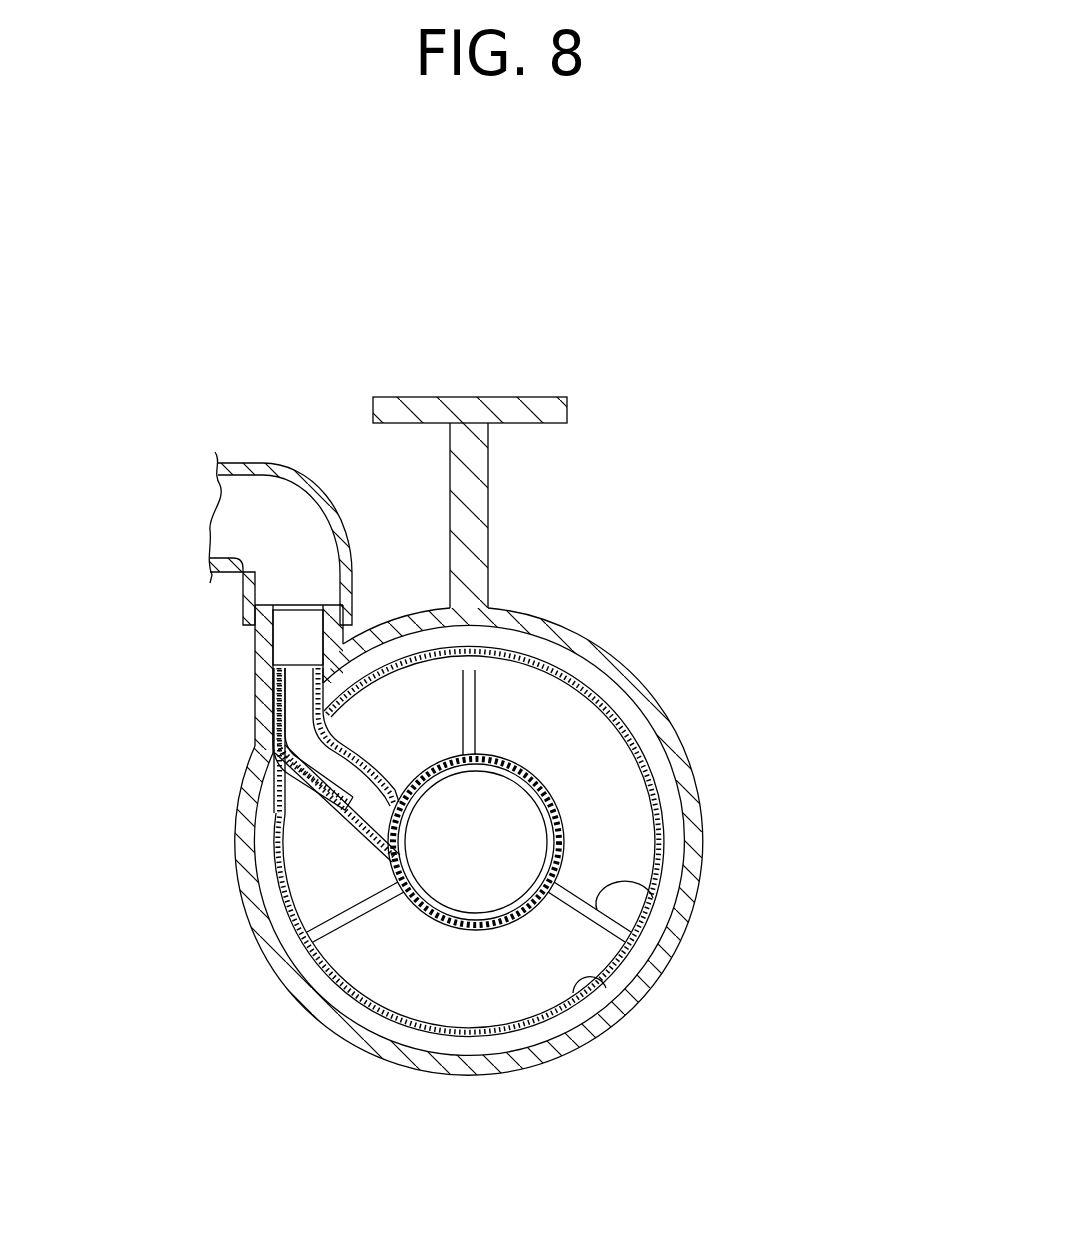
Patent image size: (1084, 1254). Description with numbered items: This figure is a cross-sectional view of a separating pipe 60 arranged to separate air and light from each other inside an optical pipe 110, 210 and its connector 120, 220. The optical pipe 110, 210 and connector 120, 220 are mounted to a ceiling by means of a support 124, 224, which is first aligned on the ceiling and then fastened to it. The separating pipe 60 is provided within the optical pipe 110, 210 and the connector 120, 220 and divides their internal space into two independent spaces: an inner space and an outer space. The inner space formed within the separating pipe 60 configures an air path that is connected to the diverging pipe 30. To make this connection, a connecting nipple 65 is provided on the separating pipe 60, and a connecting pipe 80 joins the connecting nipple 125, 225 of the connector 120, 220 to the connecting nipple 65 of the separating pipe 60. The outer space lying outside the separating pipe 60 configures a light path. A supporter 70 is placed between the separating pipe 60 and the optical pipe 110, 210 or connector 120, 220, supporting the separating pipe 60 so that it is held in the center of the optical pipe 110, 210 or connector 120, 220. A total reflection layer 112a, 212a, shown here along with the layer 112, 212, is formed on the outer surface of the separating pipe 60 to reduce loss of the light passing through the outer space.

The diverging pipe 30 is at (262, 463).
The separating pipe 60 is at (416, 911).
The connecting nipple 65 is at (385, 828).
The supporter 70 is at (653, 893).
The connecting pipe 80 is at (275, 798).
The optical pipe 110 is at (469, 901).
The optical pipe 210 is at (465, 1055).
The total reflection layer 112 is at (557, 869).
The total reflection layer 212 is at (578, 996).
The total reflection layer 112a is at (664, 842).
The total reflection layer 212a is at (562, 812).
The connector 120 is at (570, 841).
The connector 220 is at (656, 700).
The support 124 is at (571, 502).
The support 224 is at (540, 412).
The connecting nipple 125 is at (191, 679).
The connecting nipple 225 is at (262, 678).